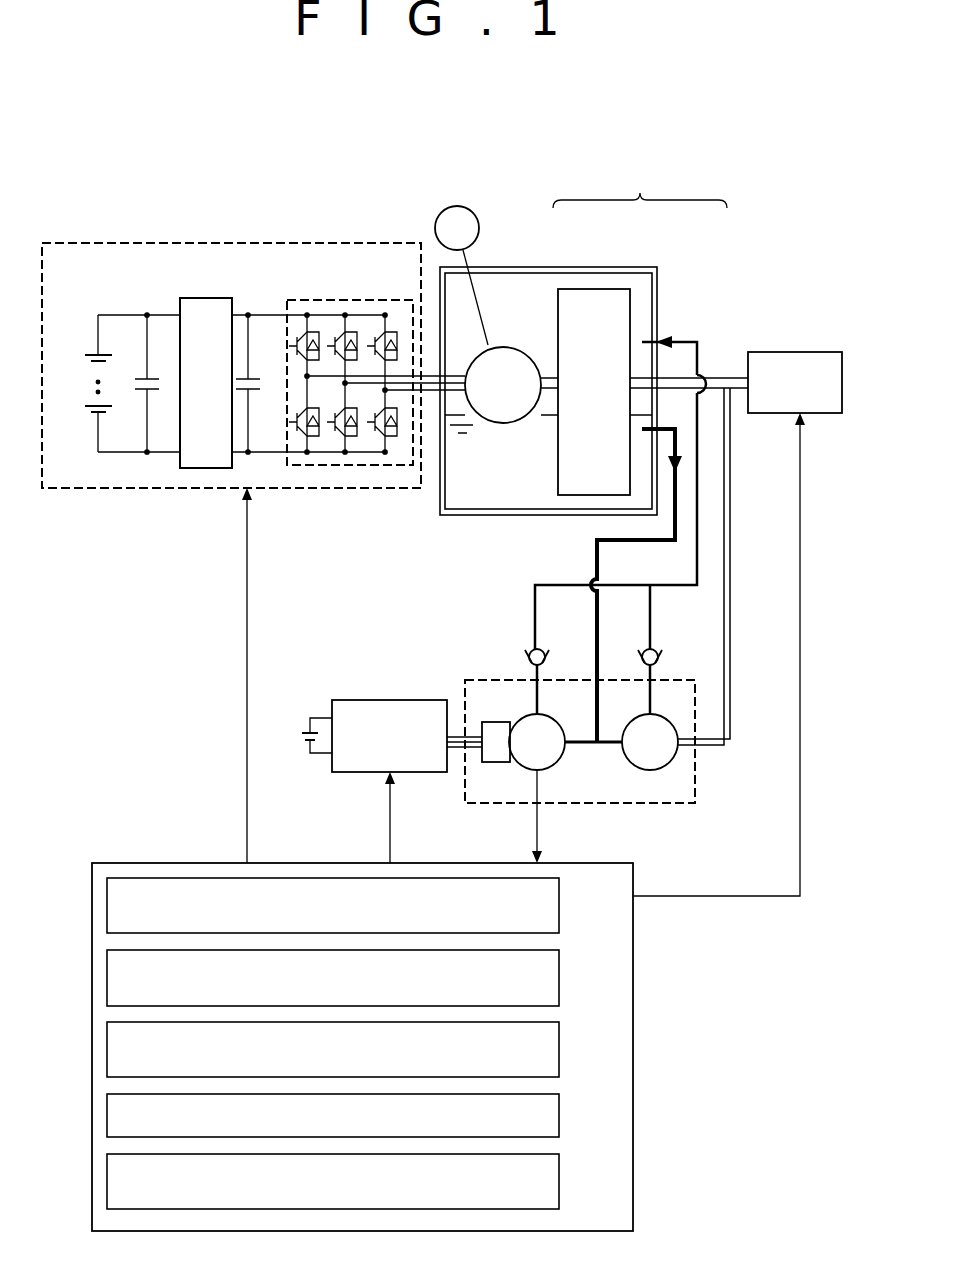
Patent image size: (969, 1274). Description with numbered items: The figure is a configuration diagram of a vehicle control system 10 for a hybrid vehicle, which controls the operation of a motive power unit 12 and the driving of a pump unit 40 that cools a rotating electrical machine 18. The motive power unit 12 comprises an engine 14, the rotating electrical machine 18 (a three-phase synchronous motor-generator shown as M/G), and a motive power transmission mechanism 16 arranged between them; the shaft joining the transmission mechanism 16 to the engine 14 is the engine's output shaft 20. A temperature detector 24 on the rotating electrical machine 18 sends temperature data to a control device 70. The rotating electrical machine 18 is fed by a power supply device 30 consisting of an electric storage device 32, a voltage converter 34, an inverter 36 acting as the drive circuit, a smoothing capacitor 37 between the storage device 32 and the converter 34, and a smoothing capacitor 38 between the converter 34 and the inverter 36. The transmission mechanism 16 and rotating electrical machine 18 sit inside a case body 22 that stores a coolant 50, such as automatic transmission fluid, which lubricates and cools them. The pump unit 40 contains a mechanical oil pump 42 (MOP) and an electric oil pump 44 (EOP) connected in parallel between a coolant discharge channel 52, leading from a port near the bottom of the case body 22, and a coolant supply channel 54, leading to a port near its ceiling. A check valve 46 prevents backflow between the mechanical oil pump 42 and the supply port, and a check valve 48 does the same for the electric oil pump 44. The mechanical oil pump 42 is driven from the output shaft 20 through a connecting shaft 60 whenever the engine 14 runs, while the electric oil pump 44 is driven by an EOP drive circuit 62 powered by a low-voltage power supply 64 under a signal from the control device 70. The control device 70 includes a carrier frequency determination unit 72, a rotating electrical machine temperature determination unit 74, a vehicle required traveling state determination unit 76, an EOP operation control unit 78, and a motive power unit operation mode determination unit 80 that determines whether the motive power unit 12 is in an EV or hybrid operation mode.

The vehicle control system 10 is at (155, 688).
The motive power unit 12 is at (640, 183).
The engine 14 is at (770, 352).
The motive power transmission mechanism 16 is at (610, 289).
The rotating electrical machine 18 is at (527, 347).
The output shaft 20 is at (727, 374).
The case body 22 is at (497, 517).
The temperature detector 24 is at (462, 206).
The power supply device 30 is at (274, 243).
The electric storage device 32 is at (85, 392).
The voltage converter 34 is at (208, 298).
The inverter 36 is at (342, 300).
The smoothing capacitor 37 is at (159, 388).
The smoothing capacitor 38 is at (262, 388).
The pump unit 40 is at (620, 766).
The mechanical oil pump 42 is at (650, 770).
The electric oil pump 44 is at (525, 768).
The check valve 46 is at (656, 650).
The check valve 48 is at (530, 650).
The coolant 50 is at (473, 447).
The coolant discharge channel 52 is at (593, 557).
The coolant supply channel 54 is at (693, 567).
The connecting shaft 60 is at (732, 593).
The EOP drive circuit 62 is at (390, 700).
The low-voltage power supply 64 is at (298, 737).
The control device 70 is at (92, 884).
The carrier frequency determination unit 72 is at (560, 902).
The rotating electrical machine temperature determination unit 74 is at (560, 975).
The vehicle required traveling state determination unit 76 is at (560, 1047).
The EOP operation control unit 78 is at (560, 1112).
The motive power unit operation mode determination unit 80 is at (560, 1180).